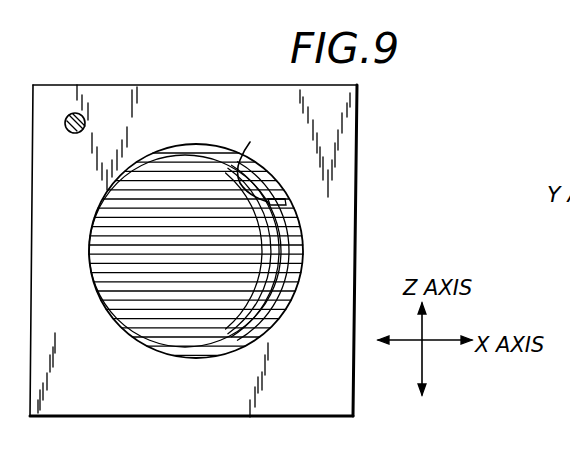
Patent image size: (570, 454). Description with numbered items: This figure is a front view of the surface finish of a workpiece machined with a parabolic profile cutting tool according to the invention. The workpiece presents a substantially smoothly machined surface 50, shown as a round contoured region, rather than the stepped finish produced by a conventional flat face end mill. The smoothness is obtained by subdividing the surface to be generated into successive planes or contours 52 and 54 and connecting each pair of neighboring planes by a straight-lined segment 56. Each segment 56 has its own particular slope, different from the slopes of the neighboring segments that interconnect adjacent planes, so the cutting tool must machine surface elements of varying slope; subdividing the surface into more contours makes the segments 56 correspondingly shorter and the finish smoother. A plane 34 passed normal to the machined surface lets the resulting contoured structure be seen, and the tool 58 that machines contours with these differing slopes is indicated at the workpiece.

The plane 34 is at (342, 108).
The smoothly machined surface 50 is at (262, 332).
The plane 52 is at (244, 158).
The plane 54 is at (286, 203).
The straight-lined segment 56 is at (270, 186).
The tool 58 is at (85, 122).